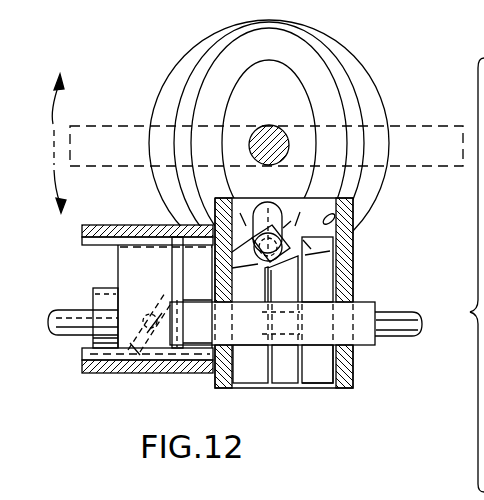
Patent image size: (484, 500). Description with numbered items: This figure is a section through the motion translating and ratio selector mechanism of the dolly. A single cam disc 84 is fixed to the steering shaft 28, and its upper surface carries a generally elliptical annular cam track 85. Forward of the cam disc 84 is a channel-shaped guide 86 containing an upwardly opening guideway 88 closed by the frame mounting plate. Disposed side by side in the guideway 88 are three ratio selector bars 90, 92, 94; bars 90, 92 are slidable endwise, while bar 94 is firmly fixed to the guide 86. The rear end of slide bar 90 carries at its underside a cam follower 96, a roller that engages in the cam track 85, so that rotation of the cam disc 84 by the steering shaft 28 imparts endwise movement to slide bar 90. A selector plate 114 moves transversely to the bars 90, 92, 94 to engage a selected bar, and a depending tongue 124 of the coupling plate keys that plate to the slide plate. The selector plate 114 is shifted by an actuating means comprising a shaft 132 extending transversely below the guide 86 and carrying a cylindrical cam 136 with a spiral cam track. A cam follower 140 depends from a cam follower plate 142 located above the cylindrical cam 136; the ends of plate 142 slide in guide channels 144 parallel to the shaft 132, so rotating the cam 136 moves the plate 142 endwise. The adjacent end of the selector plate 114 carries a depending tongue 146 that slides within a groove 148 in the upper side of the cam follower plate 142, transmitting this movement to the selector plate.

The steering shaft 28 is at (286, 128).
The cam disc 84 is at (173, 64).
The annular cam track 85 is at (211, 108).
The channel-shaped guide 86 is at (357, 275).
The guideway 88 is at (317, 258).
The ratio selector bar 90 is at (248, 383).
The ratio selector bar 92 is at (277, 383).
The ratio selector bar 94 is at (323, 383).
The cam follower 96 is at (264, 201).
The selector plate 114 is at (364, 339).
The depending tongue 124 is at (287, 342).
The shaft 132 is at (72, 340).
The cylindrical cam 136 is at (105, 344).
The cam follower 140 is at (152, 353).
The cam follower plate 142 is at (118, 258).
The guide channels 144 is at (82, 230).
The depending tongue 146 is at (183, 373).
The groove 148 is at (173, 234).